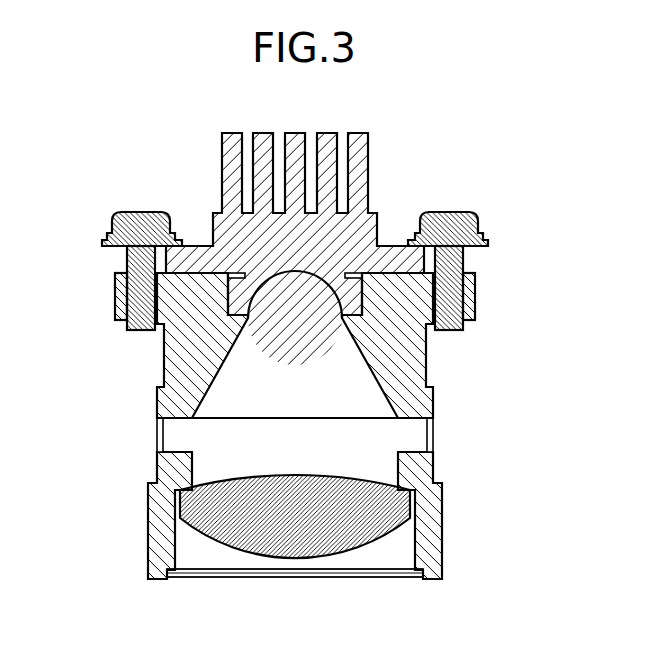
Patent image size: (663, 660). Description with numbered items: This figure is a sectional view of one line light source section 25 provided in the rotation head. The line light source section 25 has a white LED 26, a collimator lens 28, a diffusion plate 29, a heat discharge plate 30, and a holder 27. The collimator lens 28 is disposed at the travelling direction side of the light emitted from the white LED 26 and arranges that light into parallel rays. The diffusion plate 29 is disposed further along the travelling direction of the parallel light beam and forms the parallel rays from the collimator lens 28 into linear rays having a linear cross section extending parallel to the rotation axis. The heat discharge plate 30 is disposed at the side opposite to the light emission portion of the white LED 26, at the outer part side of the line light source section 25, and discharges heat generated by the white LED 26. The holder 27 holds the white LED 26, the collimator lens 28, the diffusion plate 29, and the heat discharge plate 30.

The line light source section 25 is at (114, 160).
The white LED 26 is at (283, 352).
The holder 27 is at (443, 418).
The collimator lens 28 is at (268, 557).
The diffusion plate 29 is at (353, 579).
The heat discharge plate 30 is at (370, 158).